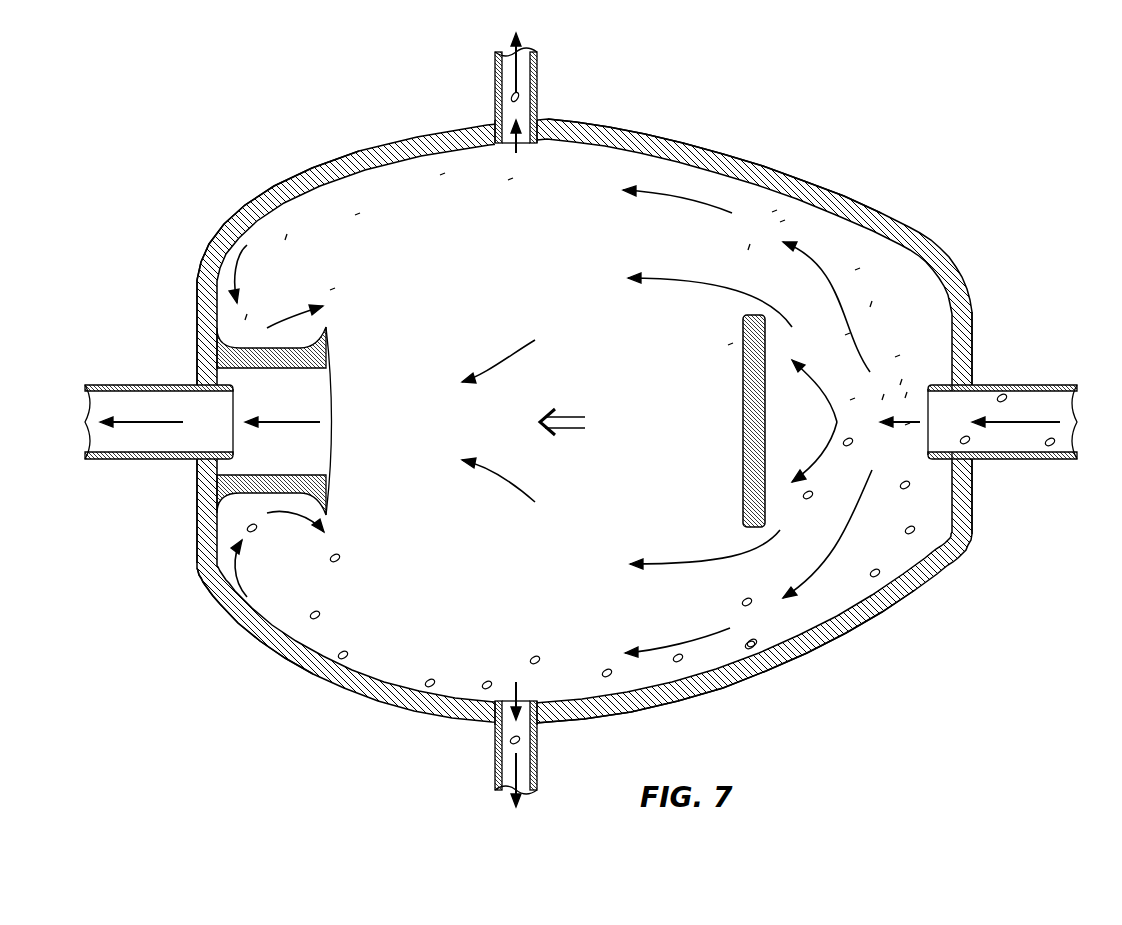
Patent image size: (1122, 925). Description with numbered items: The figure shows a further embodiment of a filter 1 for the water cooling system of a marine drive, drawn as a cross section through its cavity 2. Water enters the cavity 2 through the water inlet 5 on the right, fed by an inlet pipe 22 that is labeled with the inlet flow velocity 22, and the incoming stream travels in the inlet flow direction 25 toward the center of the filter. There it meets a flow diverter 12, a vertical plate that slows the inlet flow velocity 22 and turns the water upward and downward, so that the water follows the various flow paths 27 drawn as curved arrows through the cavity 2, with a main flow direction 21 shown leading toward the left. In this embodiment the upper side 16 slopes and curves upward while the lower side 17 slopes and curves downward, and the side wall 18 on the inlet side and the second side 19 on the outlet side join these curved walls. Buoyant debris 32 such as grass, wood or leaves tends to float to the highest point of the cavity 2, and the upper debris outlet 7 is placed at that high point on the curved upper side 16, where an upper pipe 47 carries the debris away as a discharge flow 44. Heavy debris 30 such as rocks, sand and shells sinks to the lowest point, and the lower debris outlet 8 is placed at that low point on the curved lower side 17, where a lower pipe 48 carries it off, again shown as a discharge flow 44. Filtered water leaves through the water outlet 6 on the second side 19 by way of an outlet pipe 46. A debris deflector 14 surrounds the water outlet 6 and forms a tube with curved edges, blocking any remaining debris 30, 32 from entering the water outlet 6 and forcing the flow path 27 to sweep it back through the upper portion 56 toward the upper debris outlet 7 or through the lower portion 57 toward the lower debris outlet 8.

The filter 1 is at (882, 150).
The cavity 2 is at (560, 280).
The water inlet 5 is at (955, 385).
The water outlet 6 is at (222, 393).
The upper debris outlet 7 is at (537, 120).
The lower debris outlet 8 is at (537, 722).
The flow diverter 12 is at (745, 455).
The debris deflector 14 is at (332, 361).
The upper side 16 is at (708, 147).
The lower side 17 is at (718, 697).
The inlet side wall 18 is at (972, 342).
The second side 19 is at (197, 330).
The main flow direction 21 is at (580, 416).
The inlet flow velocity 22 is at (1025, 413).
The inlet flow direction 25 is at (900, 425).
The flow path 27 is at (508, 367).
The heavy debris 30 is at (875, 570).
The buoyant debris 32 is at (513, 166).
The discharge flow 44 is at (522, 46).
The outlet pipe 46 is at (123, 385).
The upper vapor pipe 47 is at (537, 90).
The lower liquid drain pipe 48 is at (537, 758).
The upper portion 56 is at (262, 168).
The lower portion 57 is at (260, 675).